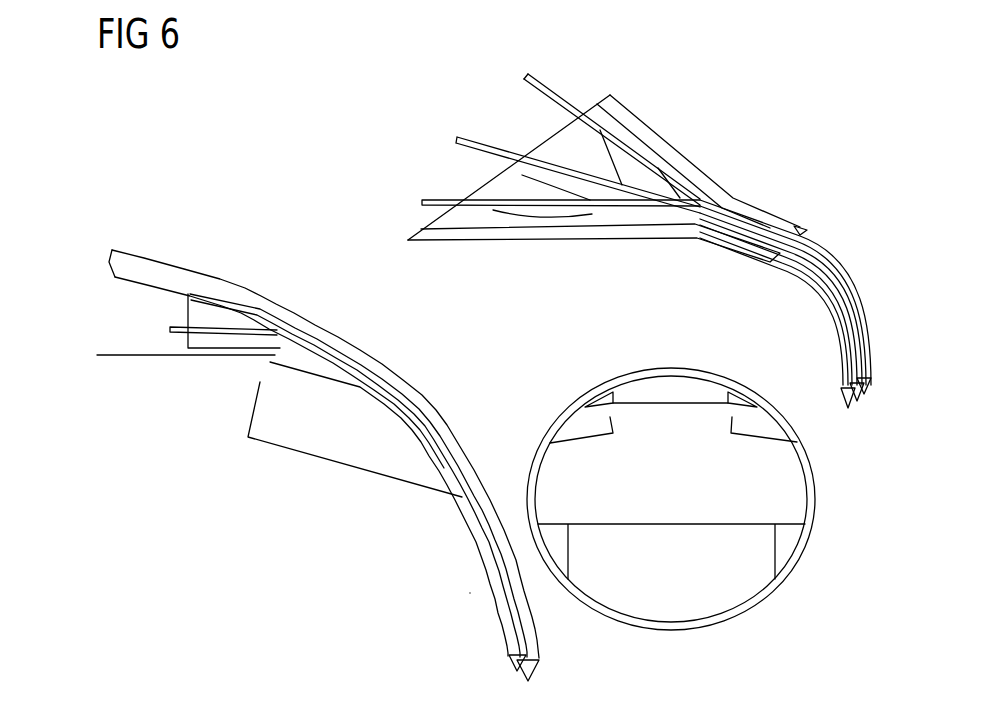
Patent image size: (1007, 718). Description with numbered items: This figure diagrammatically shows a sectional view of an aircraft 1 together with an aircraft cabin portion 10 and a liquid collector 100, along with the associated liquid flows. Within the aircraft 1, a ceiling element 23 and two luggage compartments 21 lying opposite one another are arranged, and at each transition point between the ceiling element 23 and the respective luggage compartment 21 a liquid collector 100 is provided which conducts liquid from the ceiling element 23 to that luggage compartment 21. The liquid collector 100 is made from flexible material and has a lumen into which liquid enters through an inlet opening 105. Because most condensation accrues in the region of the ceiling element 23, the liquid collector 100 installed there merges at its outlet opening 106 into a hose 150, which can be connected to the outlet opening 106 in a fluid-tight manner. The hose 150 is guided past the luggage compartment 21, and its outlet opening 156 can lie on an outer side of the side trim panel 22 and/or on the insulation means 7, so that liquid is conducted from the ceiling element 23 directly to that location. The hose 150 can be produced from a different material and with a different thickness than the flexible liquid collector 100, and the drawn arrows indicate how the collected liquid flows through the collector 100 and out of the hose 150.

The aircraft 1 is at (289, 318).
The insulation means 7 is at (505, 594).
The aircraft cabin portion 10 is at (278, 260).
The luggage compartment 21 is at (252, 428).
The side trim panel 22 is at (485, 552).
The ceiling element 23 is at (118, 357).
The liquid collector 100 is at (215, 318).
The inlet opening 105 is at (548, 139).
The outlet opening 106 is at (801, 228).
The hose 150 is at (846, 272).
The outlet opening of the hose 156 is at (866, 380).